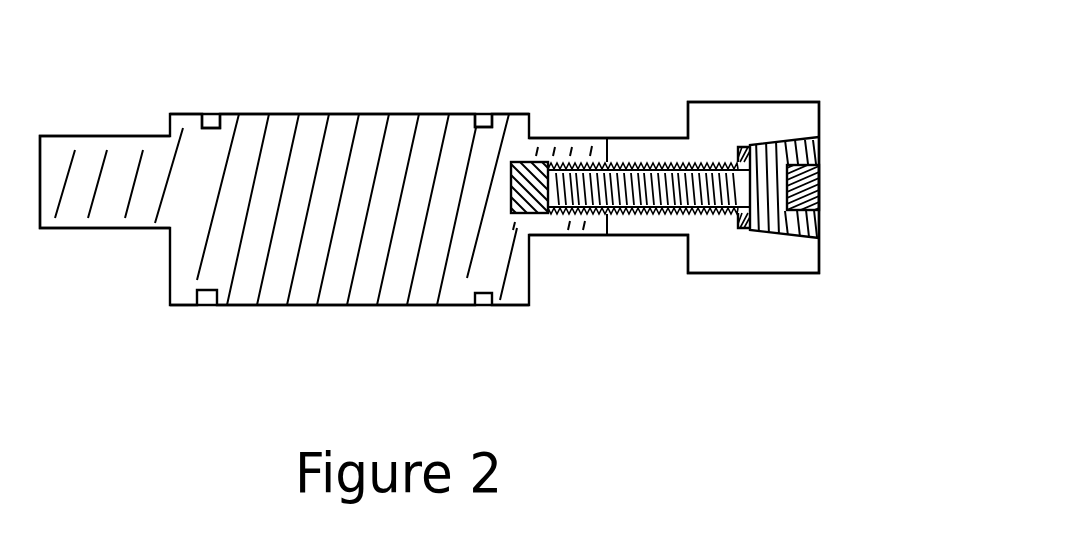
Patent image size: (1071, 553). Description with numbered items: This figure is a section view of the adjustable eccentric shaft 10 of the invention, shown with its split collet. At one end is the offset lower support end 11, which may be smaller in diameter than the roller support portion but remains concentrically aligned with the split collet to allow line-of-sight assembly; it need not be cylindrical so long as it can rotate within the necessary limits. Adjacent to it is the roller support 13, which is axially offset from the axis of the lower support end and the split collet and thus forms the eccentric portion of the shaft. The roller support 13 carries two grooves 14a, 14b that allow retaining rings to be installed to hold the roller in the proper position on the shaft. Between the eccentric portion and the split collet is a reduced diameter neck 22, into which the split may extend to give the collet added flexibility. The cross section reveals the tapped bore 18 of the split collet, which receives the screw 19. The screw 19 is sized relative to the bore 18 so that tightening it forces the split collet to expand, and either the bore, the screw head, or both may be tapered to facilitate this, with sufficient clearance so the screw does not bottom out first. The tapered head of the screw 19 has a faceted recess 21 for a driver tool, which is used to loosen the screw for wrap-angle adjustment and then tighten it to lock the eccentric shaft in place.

The shaft 10 is at (297, 313).
The offset lower support end 11 is at (128, 146).
The roller support 13 is at (375, 123).
The groove 14a is at (212, 118).
The groove 14b is at (487, 115).
The bore 18 is at (653, 190).
The screw 19 is at (815, 198).
The faceted recess 21 is at (813, 153).
The neck 22 is at (633, 107).